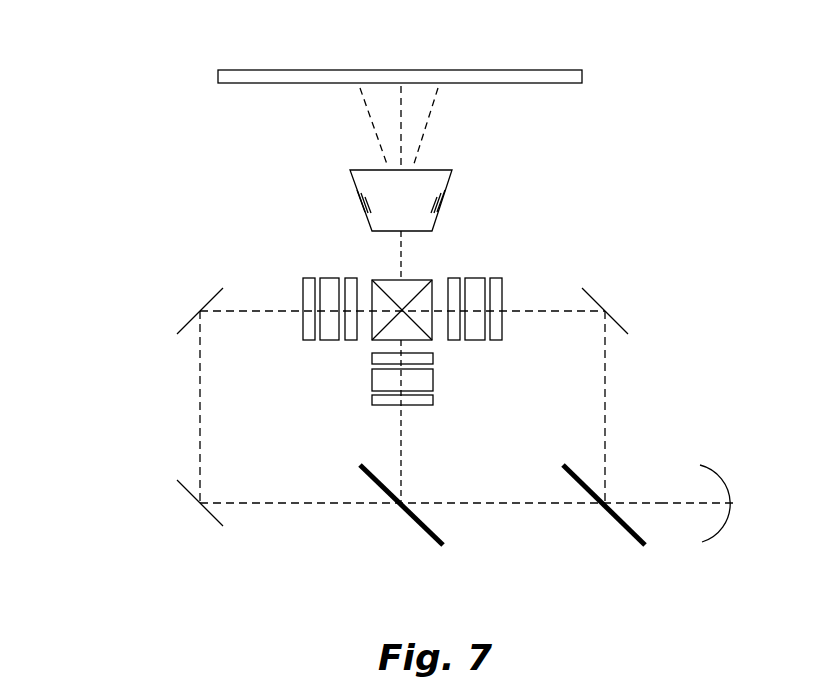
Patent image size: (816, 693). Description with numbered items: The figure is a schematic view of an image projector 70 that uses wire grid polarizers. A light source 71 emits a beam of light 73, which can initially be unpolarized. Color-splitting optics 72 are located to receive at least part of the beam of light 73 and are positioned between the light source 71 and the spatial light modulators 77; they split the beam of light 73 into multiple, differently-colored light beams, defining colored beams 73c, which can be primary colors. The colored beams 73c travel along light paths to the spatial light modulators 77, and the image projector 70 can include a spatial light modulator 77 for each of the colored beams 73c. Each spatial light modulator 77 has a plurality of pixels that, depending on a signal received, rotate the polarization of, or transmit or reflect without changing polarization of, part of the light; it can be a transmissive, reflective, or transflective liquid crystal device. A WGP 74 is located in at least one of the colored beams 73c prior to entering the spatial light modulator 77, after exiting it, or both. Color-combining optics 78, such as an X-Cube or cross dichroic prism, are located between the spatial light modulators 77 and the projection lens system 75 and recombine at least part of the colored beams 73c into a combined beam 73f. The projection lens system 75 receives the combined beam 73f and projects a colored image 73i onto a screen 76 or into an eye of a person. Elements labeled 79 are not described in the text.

The image projector 70 is at (128, 55).
The light source 71 is at (703, 467).
The color-splitting optics 72 is at (440, 548).
The beam of light 73 is at (665, 507).
The colored beams 73c is at (195, 435).
The combined beam 73f is at (401, 237).
The colored image 73i is at (430, 113).
The WGP 74 is at (352, 285).
The projection lens system 75 is at (389, 207).
The screen 76 is at (382, 73).
The spatial light modulator 77 is at (330, 338).
The color-combining optics 78 is at (422, 280).
The beam splitter mirror 79 is at (188, 310).